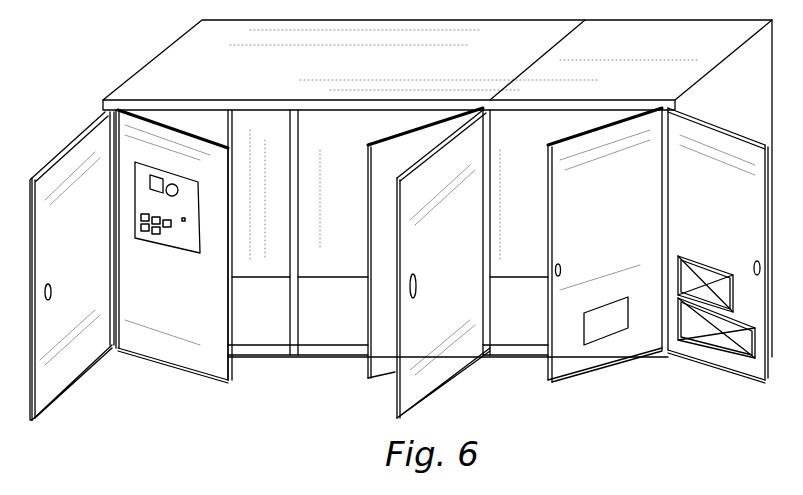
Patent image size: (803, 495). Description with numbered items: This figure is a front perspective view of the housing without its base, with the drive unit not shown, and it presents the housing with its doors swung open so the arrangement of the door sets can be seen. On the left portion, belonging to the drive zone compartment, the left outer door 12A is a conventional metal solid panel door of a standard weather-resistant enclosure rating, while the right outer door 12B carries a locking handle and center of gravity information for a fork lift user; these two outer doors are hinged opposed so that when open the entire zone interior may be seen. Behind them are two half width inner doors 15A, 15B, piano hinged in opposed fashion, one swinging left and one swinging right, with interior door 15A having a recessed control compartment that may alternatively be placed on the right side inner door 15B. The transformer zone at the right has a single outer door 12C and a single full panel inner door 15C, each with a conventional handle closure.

The left outer door 12A is at (84, 256).
The inner door 15A is at (190, 311).
The right side inner door 15B is at (395, 150).
The right outer door 12B is at (462, 247).
The full panel inner door 15C is at (610, 193).
The outer door 12C is at (737, 191).